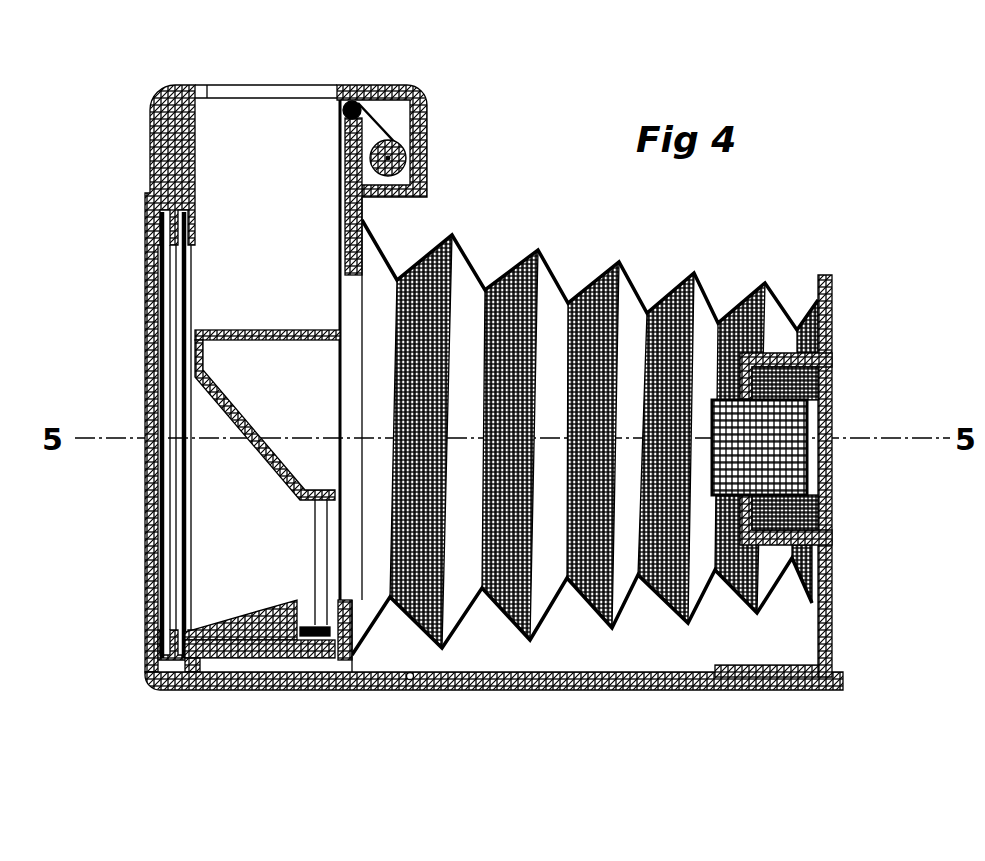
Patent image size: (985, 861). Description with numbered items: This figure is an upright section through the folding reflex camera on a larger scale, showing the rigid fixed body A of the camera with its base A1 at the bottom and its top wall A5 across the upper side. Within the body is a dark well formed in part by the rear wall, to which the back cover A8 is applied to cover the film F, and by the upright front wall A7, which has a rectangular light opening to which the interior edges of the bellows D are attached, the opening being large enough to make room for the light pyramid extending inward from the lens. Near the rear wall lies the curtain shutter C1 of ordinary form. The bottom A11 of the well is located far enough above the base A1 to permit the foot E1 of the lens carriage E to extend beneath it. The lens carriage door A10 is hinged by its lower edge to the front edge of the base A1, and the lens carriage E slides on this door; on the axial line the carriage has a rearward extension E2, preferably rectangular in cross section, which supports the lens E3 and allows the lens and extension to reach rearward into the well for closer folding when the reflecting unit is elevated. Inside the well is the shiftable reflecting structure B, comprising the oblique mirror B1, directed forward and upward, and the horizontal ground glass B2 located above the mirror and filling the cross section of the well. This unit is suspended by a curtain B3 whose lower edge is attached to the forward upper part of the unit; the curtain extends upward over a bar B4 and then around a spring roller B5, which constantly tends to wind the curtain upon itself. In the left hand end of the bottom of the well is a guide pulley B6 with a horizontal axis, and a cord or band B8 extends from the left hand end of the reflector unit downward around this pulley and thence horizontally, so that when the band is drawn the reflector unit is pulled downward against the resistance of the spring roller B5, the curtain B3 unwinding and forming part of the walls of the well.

The fixed body of the camera A is at (150, 160).
The base A1 is at (346, 667).
The top wall A5 is at (355, 97).
The upright front wall A7 is at (364, 237).
The back cover A8 is at (147, 412).
The lens carriage door A10 is at (600, 692).
The bottom of the well A11 is at (232, 658).
The reflecting structure or unit B is at (313, 398).
The mirror B1 is at (263, 447).
The ground glass B2 is at (293, 335).
The curtain B3 is at (341, 222).
The bar B4 is at (378, 91).
The spring roller B5 is at (405, 156).
The guide pulley B6 is at (313, 638).
The cord or band B8 is at (314, 552).
The curtain shutter C1 is at (186, 274).
The bellows D is at (630, 284).
The lens carriage E is at (831, 623).
The foot E1 is at (796, 668).
The rearward extension E2 is at (828, 372).
The lens E3 is at (790, 459).
The film F is at (160, 541).